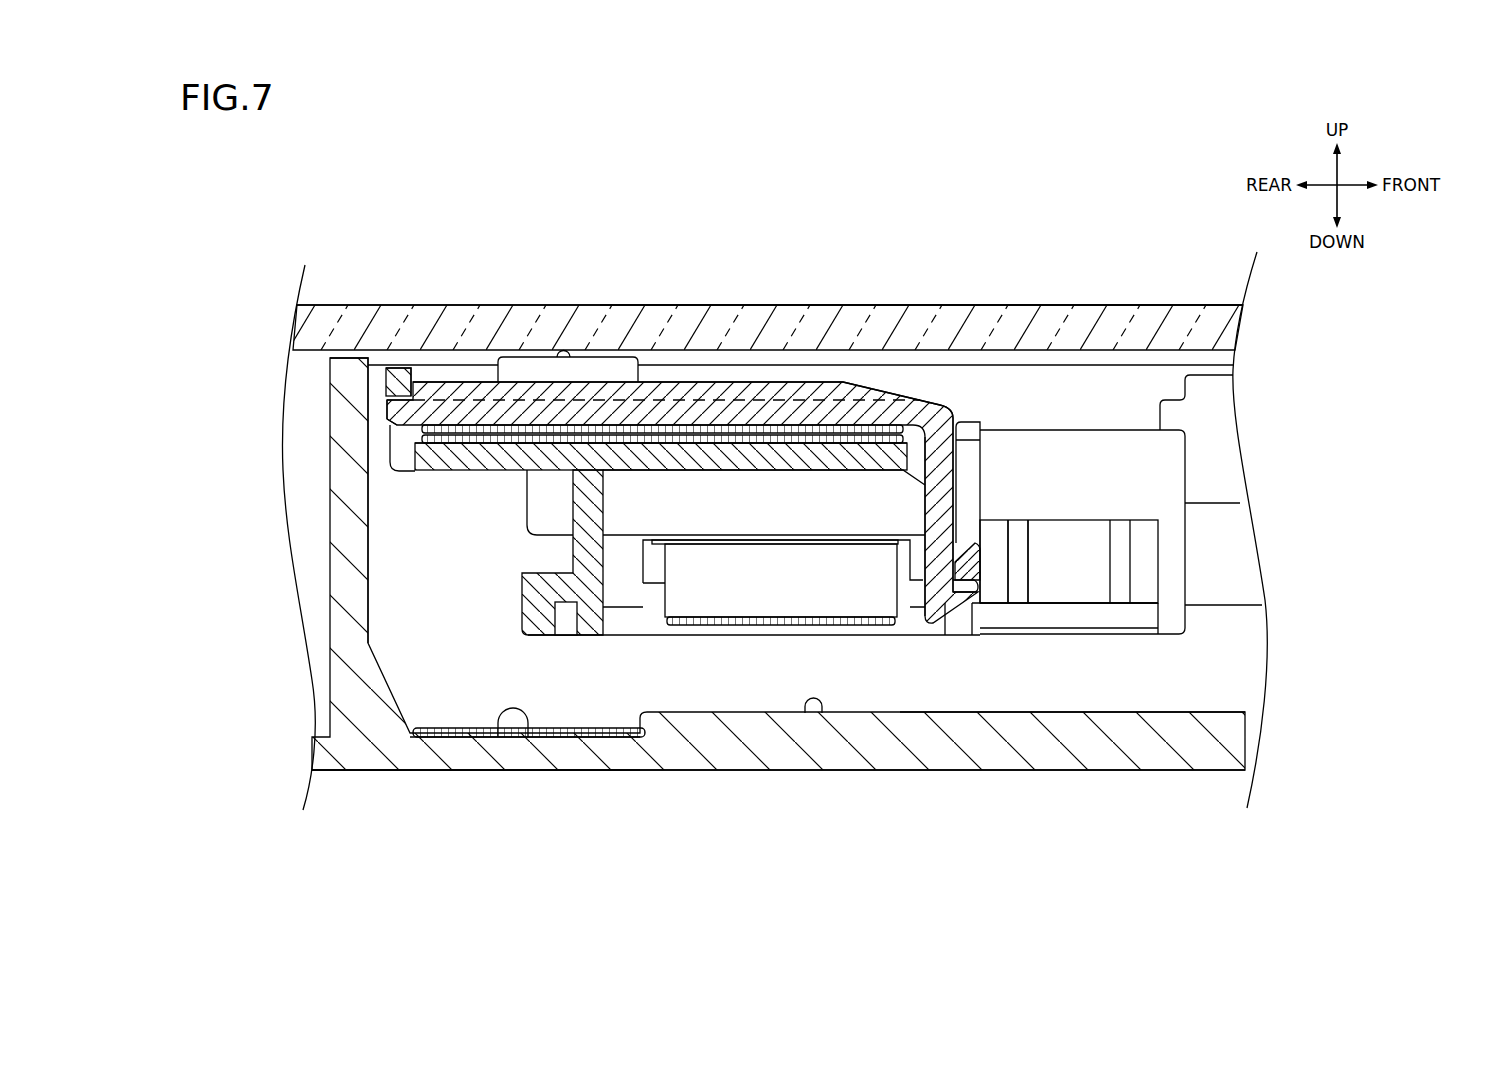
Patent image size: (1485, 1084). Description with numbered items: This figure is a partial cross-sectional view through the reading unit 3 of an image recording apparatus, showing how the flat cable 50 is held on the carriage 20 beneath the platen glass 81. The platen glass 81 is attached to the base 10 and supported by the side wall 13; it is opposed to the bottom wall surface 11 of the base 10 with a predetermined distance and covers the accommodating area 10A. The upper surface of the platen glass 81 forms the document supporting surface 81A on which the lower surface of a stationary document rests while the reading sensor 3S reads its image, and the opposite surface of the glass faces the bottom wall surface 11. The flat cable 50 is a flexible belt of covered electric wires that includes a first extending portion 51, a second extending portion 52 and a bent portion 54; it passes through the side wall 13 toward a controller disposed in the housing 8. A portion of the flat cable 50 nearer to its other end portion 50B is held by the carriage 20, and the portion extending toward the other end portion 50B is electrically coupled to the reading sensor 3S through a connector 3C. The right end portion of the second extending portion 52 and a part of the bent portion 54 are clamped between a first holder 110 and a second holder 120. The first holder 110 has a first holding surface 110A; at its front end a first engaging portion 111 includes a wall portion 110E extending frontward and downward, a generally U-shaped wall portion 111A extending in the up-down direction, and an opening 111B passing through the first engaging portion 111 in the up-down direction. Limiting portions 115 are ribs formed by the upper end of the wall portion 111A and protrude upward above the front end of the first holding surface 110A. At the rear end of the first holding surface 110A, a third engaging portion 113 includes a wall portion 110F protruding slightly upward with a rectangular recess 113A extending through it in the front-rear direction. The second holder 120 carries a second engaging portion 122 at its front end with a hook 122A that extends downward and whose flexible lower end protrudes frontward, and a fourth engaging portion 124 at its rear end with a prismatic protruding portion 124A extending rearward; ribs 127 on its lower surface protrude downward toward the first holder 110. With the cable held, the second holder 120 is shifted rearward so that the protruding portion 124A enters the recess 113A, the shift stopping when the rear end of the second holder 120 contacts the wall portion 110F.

The reading unit 3 is at (1228, 647).
The connector 3C is at (653, 560).
The reading sensor 3S is at (1047, 395).
The housing 8 is at (423, 783).
The base 10 is at (585, 775).
The accommodating area 10A is at (1110, 684).
The bottom wall surface 11 is at (822, 713).
The side wall 13 is at (347, 592).
The carriage 20 is at (1163, 457).
The flat cable 50 is at (457, 725).
The other end portion 50B is at (867, 590).
The first extending portion 51 is at (518, 738).
The second extending portion 52 is at (462, 428).
The bent portion 54 is at (758, 428).
The platen glass 81 is at (1240, 320).
The document supporting surface 81A is at (835, 305).
The first holder 110 is at (473, 457).
The first holding surface 110A is at (577, 443).
The wall portion 110E is at (920, 407).
The wall portion 110F is at (400, 367).
The first engaging portion 111 is at (975, 503).
The wall portion 111A is at (983, 558).
The opening 111B is at (953, 568).
The third engaging portion 113 is at (383, 377).
The recess 113A is at (388, 407).
The limiting portion 115 is at (965, 430).
The second holder 120 is at (656, 382).
The second engaging portion 122 is at (955, 487).
The hook 122A is at (953, 593).
The fourth engaging portion 124 is at (385, 423).
The protruding portion 124A is at (387, 415).
The ribs 127 is at (702, 410).